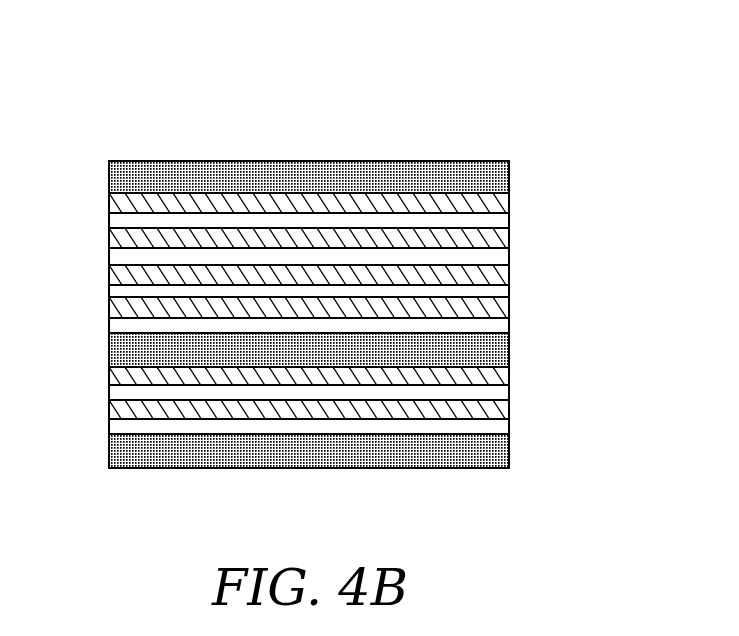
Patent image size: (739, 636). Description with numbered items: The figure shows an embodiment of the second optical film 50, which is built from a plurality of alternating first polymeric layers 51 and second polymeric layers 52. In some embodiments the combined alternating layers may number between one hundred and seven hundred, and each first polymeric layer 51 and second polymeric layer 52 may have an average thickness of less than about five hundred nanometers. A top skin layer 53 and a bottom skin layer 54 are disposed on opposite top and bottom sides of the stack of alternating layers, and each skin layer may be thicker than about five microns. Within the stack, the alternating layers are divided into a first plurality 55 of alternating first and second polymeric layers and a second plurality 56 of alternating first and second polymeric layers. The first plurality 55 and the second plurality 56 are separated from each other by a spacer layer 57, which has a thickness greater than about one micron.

The second optical film 50 is at (505, 108).
The first polymeric layer 51 is at (109, 207).
The second polymeric layer 52 is at (109, 224).
The top skin layer 53 is at (195, 160).
The bottom skin layer 54 is at (442, 468).
The first plurality of alternating first and second polymeric layers 55 is at (318, 250).
The second plurality of alternating first and second polymeric layers 56 is at (513, 368).
The spacer layer 57 is at (109, 343).